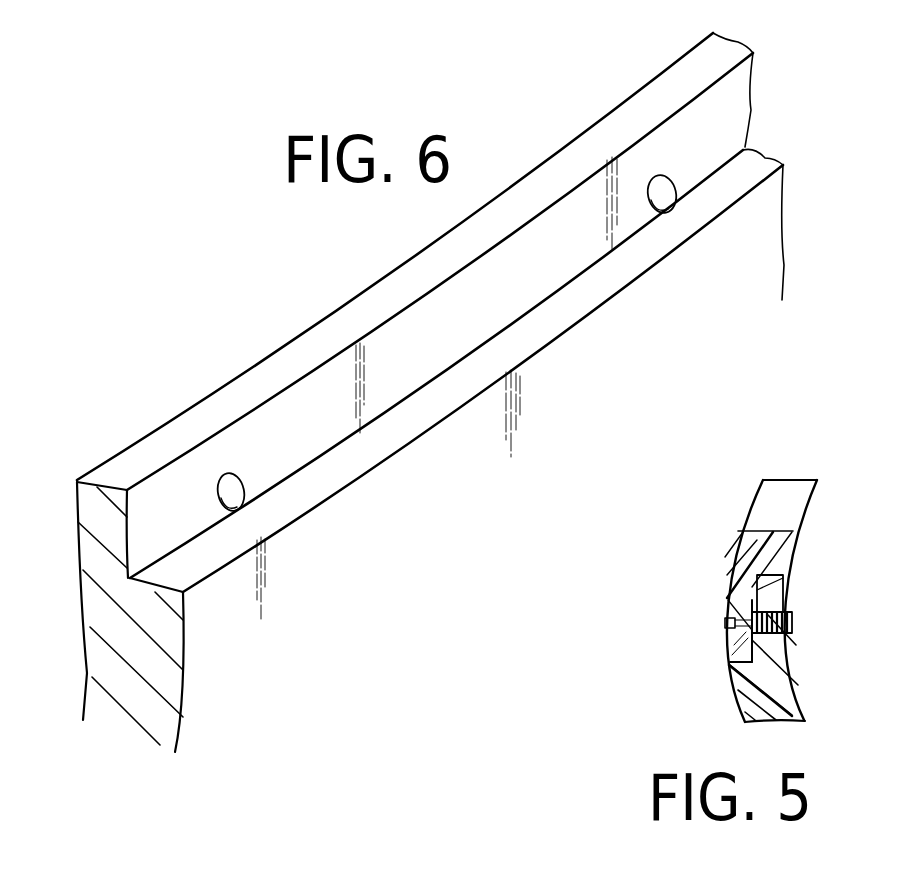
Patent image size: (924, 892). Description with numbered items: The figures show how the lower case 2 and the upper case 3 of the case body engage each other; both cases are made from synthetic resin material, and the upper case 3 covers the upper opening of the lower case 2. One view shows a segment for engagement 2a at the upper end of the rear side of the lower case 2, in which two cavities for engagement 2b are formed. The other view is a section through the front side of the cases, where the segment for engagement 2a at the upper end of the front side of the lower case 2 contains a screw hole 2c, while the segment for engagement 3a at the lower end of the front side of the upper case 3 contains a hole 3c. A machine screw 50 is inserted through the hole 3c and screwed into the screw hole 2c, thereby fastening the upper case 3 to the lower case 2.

In FIG. 6, the lower case 2 is at (772, 217).
In FIG. 5, the lower case 2 is at (800, 695).
In FIG. 6, the segment for engagement 2a is at (732, 93).
In FIG. 5, the segment for engagement 2a is at (785, 593).
In FIG. 6, the cavity for engagement 2b is at (236, 478).
In FIG. 5, the screw hole 2c is at (790, 606).
In FIG. 5, the upper case 3 is at (737, 538).
In FIG. 5, the segment for engagement 3a is at (735, 655).
In FIG. 5, the hole 3c is at (727, 603).
In FIG. 5, the machine screw 50 is at (725, 633).